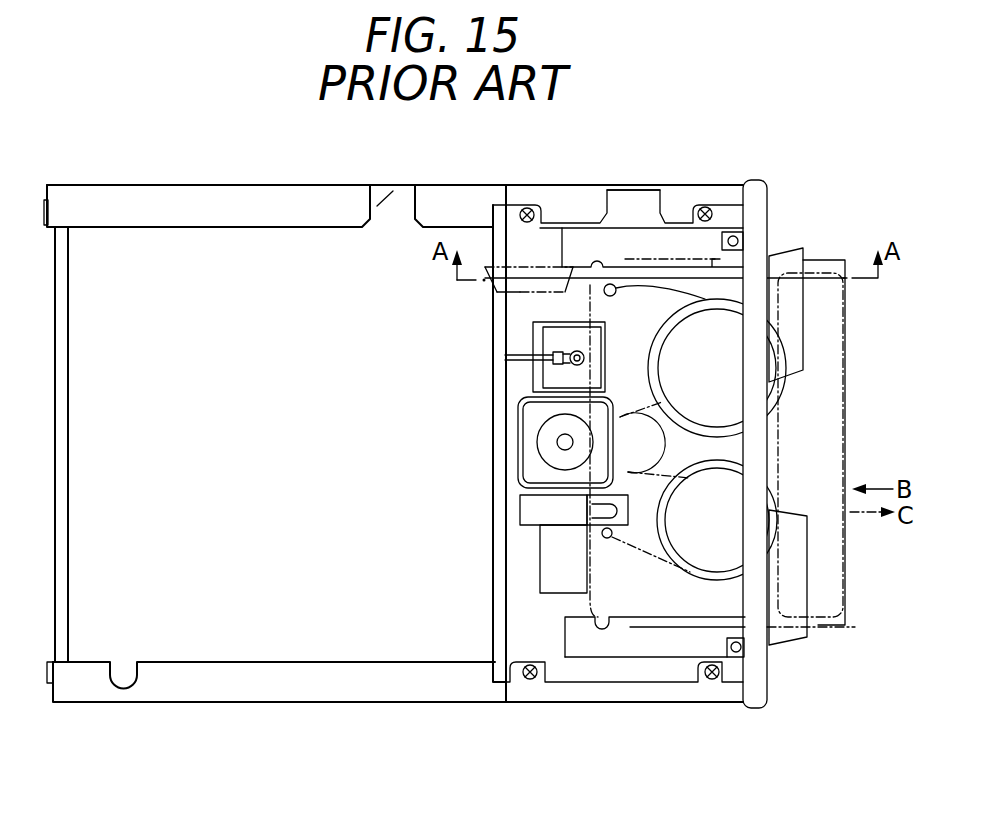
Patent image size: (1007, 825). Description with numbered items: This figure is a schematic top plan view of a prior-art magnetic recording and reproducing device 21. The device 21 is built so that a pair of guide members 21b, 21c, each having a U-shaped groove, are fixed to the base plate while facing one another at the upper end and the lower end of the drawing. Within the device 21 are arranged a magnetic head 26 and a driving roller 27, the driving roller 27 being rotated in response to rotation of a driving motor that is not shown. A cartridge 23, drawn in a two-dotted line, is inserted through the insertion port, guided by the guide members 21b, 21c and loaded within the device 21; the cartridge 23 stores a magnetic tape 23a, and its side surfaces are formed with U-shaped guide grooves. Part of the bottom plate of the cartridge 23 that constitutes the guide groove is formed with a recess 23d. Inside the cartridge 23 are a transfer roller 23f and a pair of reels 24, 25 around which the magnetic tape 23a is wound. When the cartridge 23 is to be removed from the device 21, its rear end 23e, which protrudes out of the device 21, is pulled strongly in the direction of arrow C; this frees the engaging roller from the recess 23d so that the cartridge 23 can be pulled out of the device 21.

The magnetic recording and reproducing device 21 is at (491, 714).
The guide member 21b is at (587, 243).
The guide member 21c is at (643, 633).
The cartridge 23 is at (847, 533).
The magnetic tape 23a is at (603, 296).
The recess 23d is at (617, 265).
The rear end 23e is at (795, 410).
The transfer roller 23f is at (627, 447).
The reel 24 is at (722, 327).
The reel 25 is at (723, 563).
The magnetic head 26 is at (560, 376).
The driving roller 27 is at (547, 437).